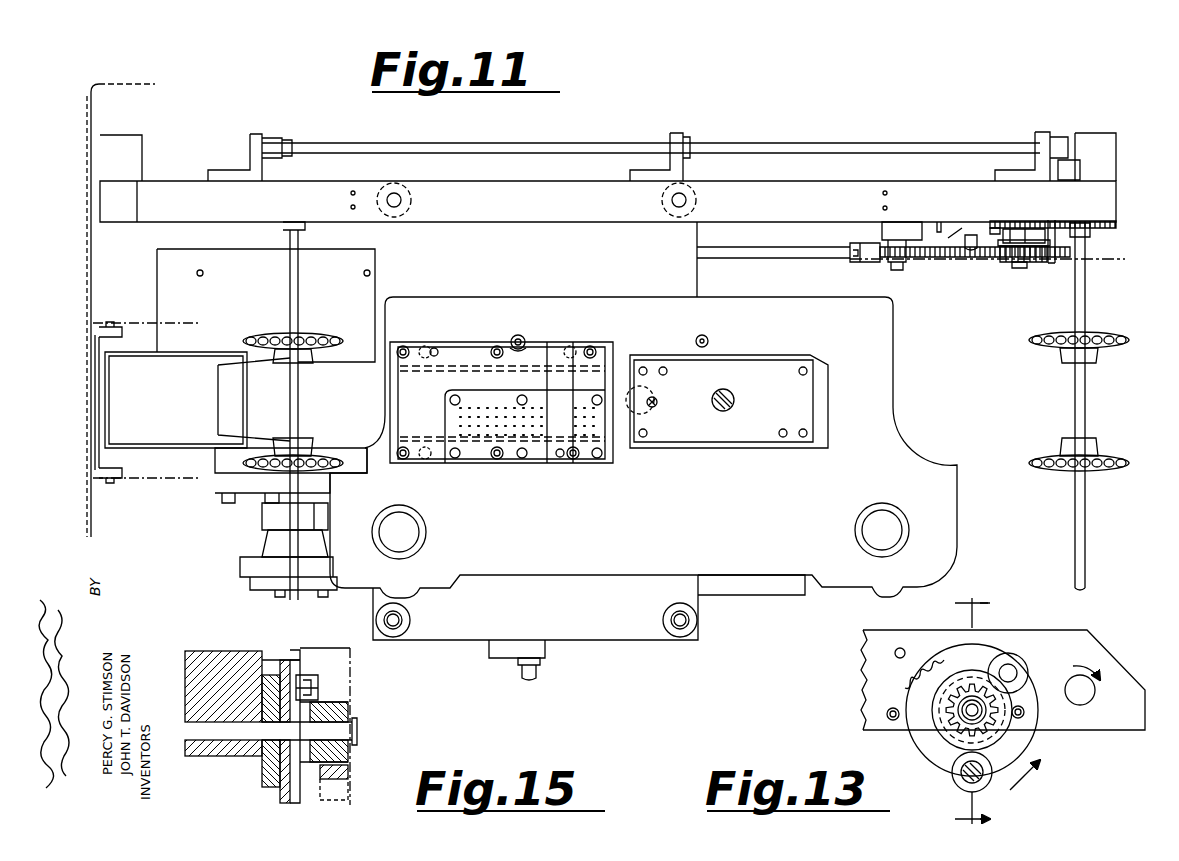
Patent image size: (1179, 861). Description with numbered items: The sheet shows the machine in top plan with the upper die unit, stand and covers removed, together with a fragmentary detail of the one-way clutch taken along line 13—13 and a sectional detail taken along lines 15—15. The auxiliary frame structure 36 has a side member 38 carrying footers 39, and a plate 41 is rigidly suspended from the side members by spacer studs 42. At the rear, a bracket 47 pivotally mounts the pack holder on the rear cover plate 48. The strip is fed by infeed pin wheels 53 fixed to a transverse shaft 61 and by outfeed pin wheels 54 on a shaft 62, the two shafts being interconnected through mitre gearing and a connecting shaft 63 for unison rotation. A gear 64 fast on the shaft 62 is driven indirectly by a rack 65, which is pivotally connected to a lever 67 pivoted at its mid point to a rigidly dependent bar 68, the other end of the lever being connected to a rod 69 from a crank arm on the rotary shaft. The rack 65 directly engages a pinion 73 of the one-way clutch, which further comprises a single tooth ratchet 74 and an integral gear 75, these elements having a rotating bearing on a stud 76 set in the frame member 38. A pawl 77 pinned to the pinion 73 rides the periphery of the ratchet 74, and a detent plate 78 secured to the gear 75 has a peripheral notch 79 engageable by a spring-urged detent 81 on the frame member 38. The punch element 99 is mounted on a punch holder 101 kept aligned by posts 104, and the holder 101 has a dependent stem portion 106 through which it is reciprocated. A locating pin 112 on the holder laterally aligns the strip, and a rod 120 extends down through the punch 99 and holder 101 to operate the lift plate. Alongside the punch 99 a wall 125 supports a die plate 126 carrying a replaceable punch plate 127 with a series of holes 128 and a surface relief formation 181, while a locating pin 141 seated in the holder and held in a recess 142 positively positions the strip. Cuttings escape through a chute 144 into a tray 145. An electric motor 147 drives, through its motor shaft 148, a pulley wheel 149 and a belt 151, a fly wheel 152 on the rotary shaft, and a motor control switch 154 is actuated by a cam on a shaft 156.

In FIG. 11, the section line 13— 13 is at (966, 264).
In FIG. 13, the section line 15— 15 is at (970, 710).
In FIG. 11, the auxiliary frame structure 36 is at (190, 180).
In FIG. 11, the side member 38 is at (167, 187).
In FIG. 15, the side member 38 is at (215, 752).
In FIG. 13, the side member 38 is at (1080, 732).
In FIG. 11, the footers 39 is at (122, 140).
In FIG. 11, the plate 41 is at (604, 642).
In FIG. 11, the spacer studs 42 is at (680, 640).
In FIG. 11, the bracket 47 is at (95, 437).
In FIG. 11, the rear cover plate 48 is at (90, 250).
In FIG. 11, the infeed pin wheels 53 is at (318, 338).
In FIG. 11, the outfeed pin wheels 54 is at (1041, 458).
In FIG. 11, the transverse shaft 61 is at (299, 285).
In FIG. 11, the shaft 62 is at (1075, 408).
In FIG. 13, the shaft 62 is at (1092, 698).
In FIG. 11, the connecting shaft 63 is at (576, 147).
In FIG. 11, the gear 64 is at (1110, 226).
In FIG. 11, the rack 65 is at (955, 263).
In FIG. 15, the rack 65 is at (334, 782).
In FIG. 11, the lever 67 is at (882, 260).
In FIG. 11, the dependent bar 68 is at (905, 222).
In FIG. 11, the rod 69 is at (752, 259).
In FIG. 11, the pinion 73 is at (1005, 263).
In FIG. 15, the pinion 73 is at (333, 700).
In FIG. 13, the pinion 73 is at (953, 722).
In FIG. 11, the single tooth ratchet 74 is at (1045, 242).
In FIG. 15, the single tooth ratchet 74 is at (302, 805).
In FIG. 13, the single tooth ratchet 74 is at (955, 735).
In FIG. 11, the gear 75 is at (1015, 222).
In FIG. 15, the gear 75 is at (272, 788).
In FIG. 13, the gear 75 is at (918, 670).
In FIG. 11, the stud 76 is at (1020, 269).
In FIG. 15, the stud 76 is at (350, 732).
In FIG. 13, the stud 76 is at (972, 710).
In FIG. 11, the pawl 77 is at (1024, 236).
In FIG. 15, the pawl 77 is at (304, 674).
In FIG. 13, the pawl 77 is at (970, 672).
In FIG. 11, the detent plate 78 is at (993, 226).
In FIG. 15, the detent plate 78 is at (290, 805).
In FIG. 13, the detent plate 78 is at (950, 778).
In FIG. 13, the peripheral notch 79 is at (1037, 713).
In FIG. 11, the detent 81 is at (972, 232).
In FIG. 13, the detent 81 is at (888, 716).
In FIG. 11, the punch element 99 is at (822, 428).
In FIG. 11, the punch holder 101 is at (897, 446).
In FIG. 11, the posts 104 is at (900, 531).
In FIG. 11, the dependent stem portion 106 is at (632, 392).
In FIG. 11, the locating pin 112 is at (708, 339).
In FIG. 11, the rod 120 is at (735, 400).
In FIG. 11, the wall 125 is at (605, 466).
In FIG. 11, the die plate 126 is at (434, 466).
In FIG. 11, the punch plate 127 is at (533, 466).
In FIG. 11, the holes 128 is at (445, 414).
In FIG. 11, the locating pin 141 is at (518, 335).
In FIG. 11, the recess 142 is at (527, 340).
In FIG. 11, the chute 144 is at (218, 400).
In FIG. 11, the tray 145 is at (166, 364).
In FIG. 11, the electric motor 147 is at (222, 470).
In FIG. 11, the motor shaft 148 is at (278, 527).
In FIG. 11, the pulley wheel 149 is at (240, 556).
In FIG. 11, the belt 151 is at (245, 571).
In FIG. 11, the fly wheel 152 is at (757, 592).
In FIG. 11, the motor control switch 154 is at (538, 652).
In FIG. 11, the shaft 156 is at (534, 678).
In FIG. 11, the formation 181 is at (562, 350).